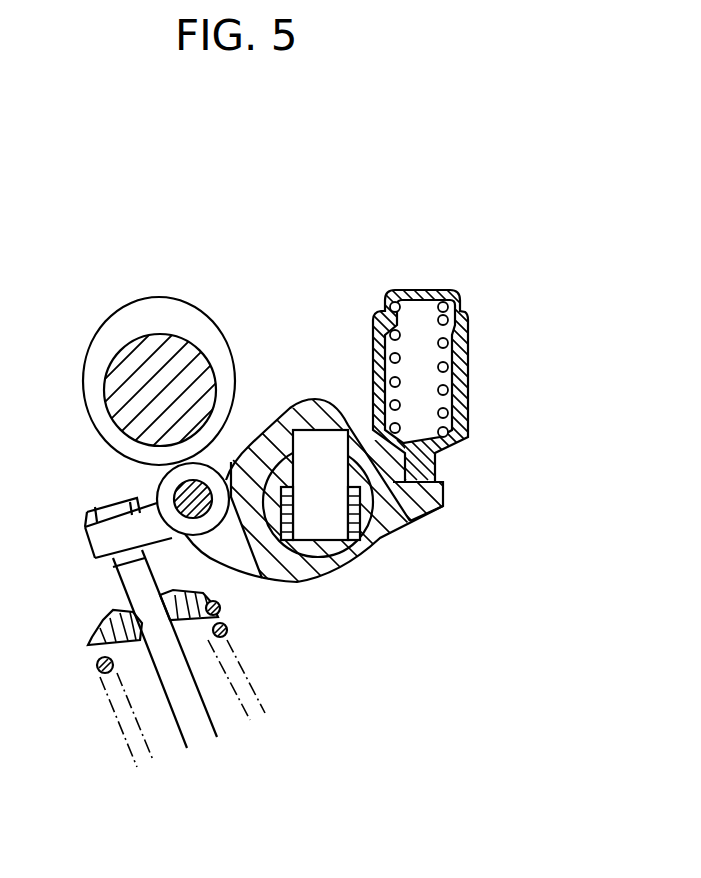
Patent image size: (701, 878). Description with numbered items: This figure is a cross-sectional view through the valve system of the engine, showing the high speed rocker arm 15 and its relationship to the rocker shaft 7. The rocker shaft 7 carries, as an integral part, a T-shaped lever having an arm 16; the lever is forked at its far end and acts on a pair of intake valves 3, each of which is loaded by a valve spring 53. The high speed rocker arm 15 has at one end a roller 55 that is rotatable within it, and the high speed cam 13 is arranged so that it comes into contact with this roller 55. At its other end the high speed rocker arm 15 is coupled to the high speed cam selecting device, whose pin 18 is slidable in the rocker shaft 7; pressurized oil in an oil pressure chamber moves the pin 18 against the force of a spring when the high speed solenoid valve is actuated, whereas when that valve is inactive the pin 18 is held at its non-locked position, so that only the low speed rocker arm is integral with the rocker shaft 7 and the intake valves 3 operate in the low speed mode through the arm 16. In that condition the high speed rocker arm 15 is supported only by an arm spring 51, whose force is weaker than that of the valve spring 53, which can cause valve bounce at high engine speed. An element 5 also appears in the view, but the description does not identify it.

The intake valves 3 is at (187, 723).
The camshaft 5 is at (127, 368).
The rocker shaft 7 is at (358, 523).
The high speed cam 13 is at (167, 315).
The high speed rocker arm 15 is at (403, 517).
The arm 16 is at (90, 547).
The pin 18 is at (313, 467).
The arm spring 51 is at (425, 287).
The valve spring 53 is at (97, 670).
The roller 55 is at (160, 490).